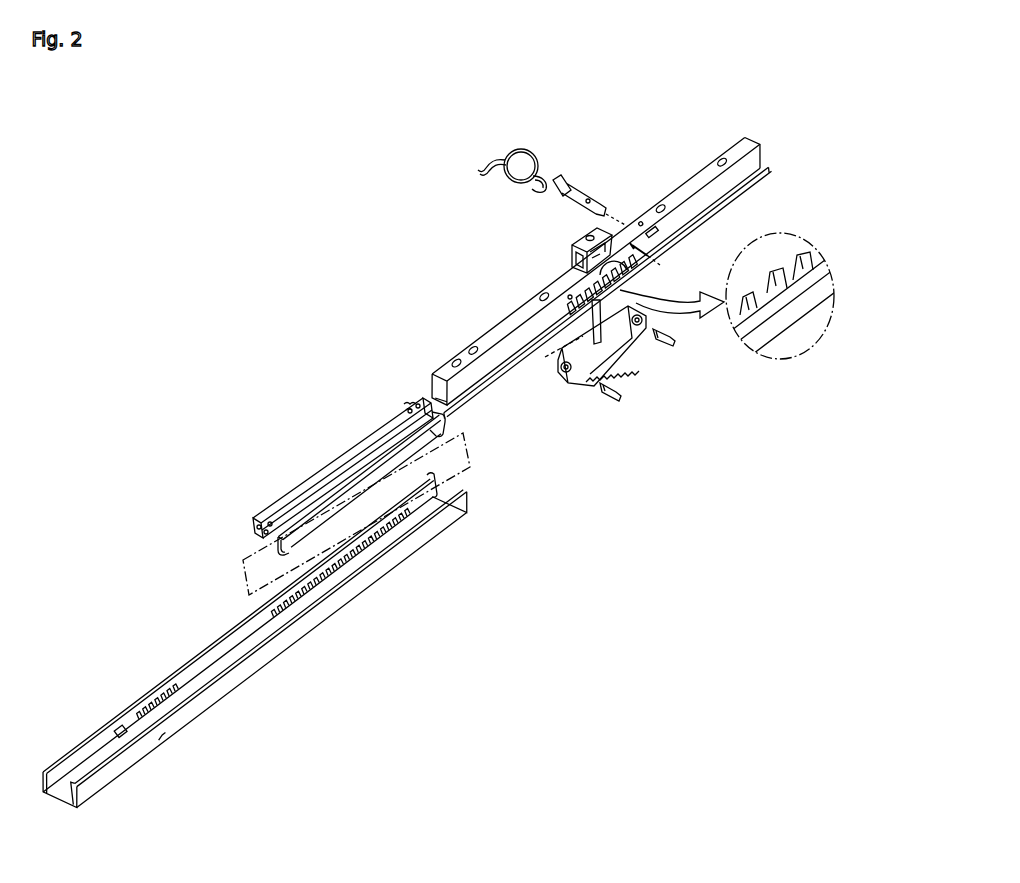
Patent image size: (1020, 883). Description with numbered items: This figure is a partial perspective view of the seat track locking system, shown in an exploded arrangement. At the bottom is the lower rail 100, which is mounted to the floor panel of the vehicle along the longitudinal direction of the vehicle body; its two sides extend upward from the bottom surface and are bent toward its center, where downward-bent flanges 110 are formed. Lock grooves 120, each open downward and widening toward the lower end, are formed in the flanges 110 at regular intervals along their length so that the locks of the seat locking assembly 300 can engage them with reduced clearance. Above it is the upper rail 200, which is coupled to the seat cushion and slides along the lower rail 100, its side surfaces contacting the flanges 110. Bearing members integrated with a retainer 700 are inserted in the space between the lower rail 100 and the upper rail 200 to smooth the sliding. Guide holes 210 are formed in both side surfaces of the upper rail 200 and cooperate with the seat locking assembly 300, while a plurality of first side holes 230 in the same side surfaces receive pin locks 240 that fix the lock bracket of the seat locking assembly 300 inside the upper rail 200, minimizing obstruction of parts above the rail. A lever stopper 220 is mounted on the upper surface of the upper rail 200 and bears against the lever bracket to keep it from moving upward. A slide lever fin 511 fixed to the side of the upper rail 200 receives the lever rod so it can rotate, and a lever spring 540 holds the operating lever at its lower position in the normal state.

The lower rail 100 is at (416, 570).
The flanges 110 is at (450, 492).
The lock grooves 120 is at (340, 577).
The upper rail 200 is at (750, 130).
The guide holes 210 is at (785, 265).
The lever stopper 220 is at (580, 240).
The first side holes 230 is at (569, 296).
The pin locks 240 is at (680, 343).
The seat locking assembly 300 is at (634, 360).
The slide lever fin 511 is at (583, 186).
The lever spring 540 is at (540, 150).
The retainer 700 is at (320, 460).